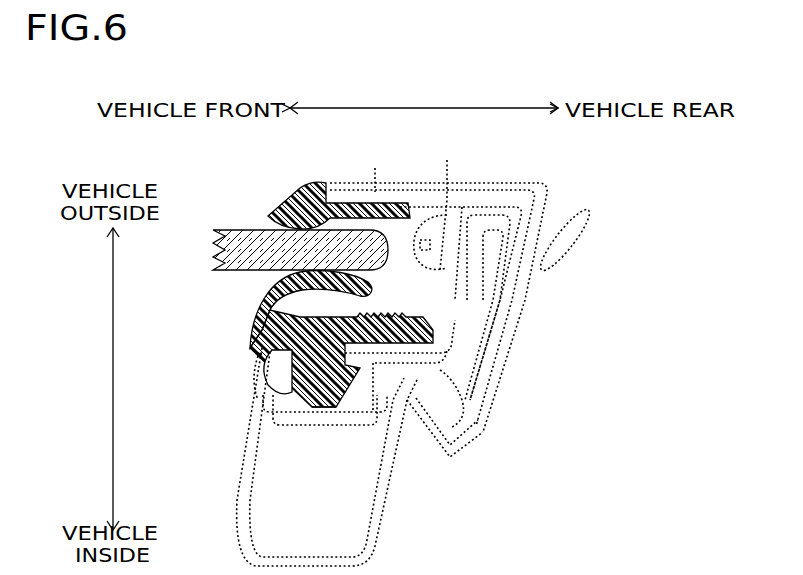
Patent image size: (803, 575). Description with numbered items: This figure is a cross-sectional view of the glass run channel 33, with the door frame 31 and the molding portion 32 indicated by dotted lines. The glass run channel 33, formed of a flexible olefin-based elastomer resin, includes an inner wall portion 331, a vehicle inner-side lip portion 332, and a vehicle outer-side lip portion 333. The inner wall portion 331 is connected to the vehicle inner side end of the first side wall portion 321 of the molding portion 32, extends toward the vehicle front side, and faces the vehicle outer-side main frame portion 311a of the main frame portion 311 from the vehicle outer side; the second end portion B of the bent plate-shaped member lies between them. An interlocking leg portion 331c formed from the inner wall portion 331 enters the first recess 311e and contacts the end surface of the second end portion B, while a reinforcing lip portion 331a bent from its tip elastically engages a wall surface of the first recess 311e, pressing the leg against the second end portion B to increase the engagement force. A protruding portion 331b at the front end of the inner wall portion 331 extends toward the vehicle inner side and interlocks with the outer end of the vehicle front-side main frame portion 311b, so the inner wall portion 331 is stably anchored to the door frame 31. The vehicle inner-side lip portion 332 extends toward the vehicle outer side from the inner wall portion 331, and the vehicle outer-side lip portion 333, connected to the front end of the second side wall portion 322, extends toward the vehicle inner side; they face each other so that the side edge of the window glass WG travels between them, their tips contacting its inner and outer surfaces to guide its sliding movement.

The window glass WG is at (210, 249).
The glass run channel 33 is at (301, 302).
The vehicle outer-side lip portion 333 is at (305, 262).
The vehicle inner-side lip portion 332 is at (285, 280).
The inner wall portion 331 is at (301, 376).
The reinforcing lip portion 331a is at (290, 378).
The protruding portion 331b is at (262, 353).
The interlocking leg portion 331c is at (341, 395).
The molding portion 32 is at (462, 285).
The first side wall portion 321 is at (445, 204).
The second side wall portion 322 is at (375, 169).
The door frame 31 is at (321, 457).
The main frame portion 311 is at (321, 457).
The vehicle outer-side main frame portion 311a is at (402, 355).
The vehicle front-side main frame portion 311b is at (240, 455).
The first recess 311e is at (275, 365).
The second end portion B is at (383, 398).